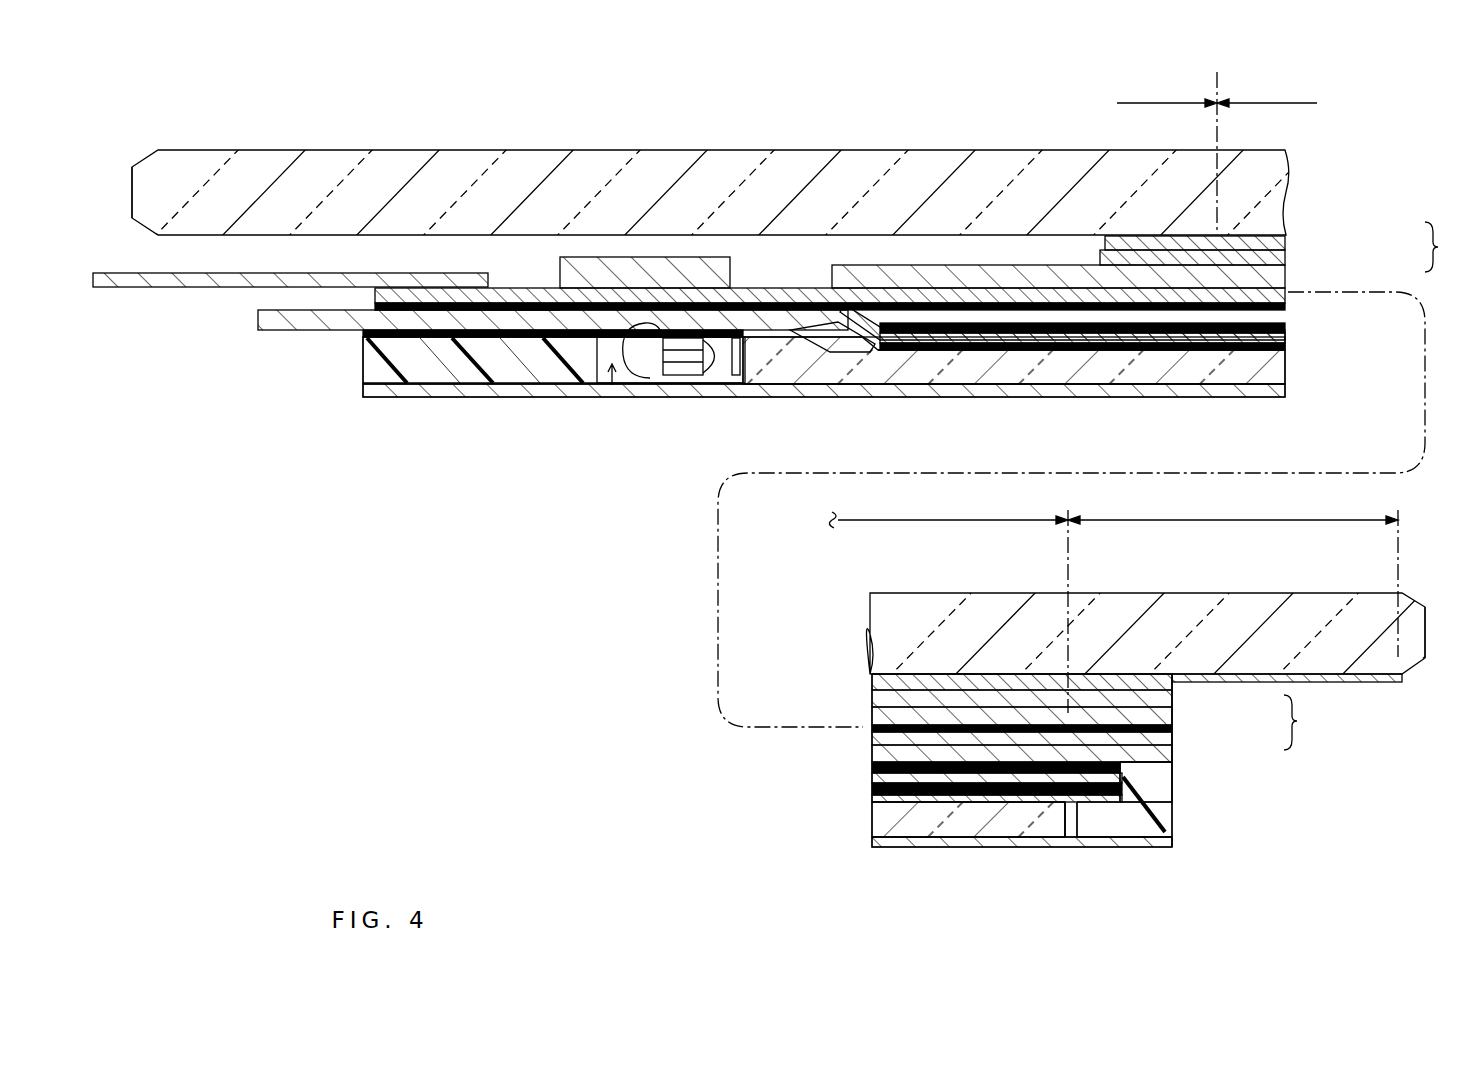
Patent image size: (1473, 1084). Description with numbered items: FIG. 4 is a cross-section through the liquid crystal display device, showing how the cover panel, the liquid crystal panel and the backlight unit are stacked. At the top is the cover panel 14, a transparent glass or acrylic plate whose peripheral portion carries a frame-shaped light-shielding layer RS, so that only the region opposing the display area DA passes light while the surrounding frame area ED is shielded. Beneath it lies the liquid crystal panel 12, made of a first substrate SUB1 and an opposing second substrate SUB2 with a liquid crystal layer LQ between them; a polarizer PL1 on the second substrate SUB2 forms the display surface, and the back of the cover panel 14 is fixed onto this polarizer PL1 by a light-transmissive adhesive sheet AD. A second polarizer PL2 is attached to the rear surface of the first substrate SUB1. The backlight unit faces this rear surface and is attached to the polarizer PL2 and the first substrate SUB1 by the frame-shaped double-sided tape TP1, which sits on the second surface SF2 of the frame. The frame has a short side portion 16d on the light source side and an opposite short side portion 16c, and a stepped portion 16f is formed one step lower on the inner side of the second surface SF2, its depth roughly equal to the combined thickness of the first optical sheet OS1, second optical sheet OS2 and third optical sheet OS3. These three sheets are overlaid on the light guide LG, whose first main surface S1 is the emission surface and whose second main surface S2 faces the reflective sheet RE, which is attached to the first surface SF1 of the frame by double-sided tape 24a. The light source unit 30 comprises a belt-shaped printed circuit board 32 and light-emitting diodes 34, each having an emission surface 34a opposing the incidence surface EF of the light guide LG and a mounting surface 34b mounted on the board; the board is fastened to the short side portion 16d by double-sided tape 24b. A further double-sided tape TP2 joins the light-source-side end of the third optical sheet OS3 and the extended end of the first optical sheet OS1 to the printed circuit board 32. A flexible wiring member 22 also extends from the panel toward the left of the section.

The cover panel 14 is at (380, 160).
The light-shielding layer RS is at (223, 243).
The flexible wiring board 22 is at (147, 290).
The printed circuit board 32 is at (527, 320).
The second substrate SUB2 is at (1282, 278).
The first substrate SUB1 is at (1282, 298).
The liquid crystal panel 12 is at (1375, 486).
The polarizer PL1 is at (1265, 248).
The adhesive sheet AD is at (1275, 257).
The liquid crystal layer LQ is at (1025, 720).
The double-sided tape TP1 is at (772, 302).
The double-sided tape TP2 is at (958, 312).
The polarizer PL2 is at (1288, 314).
The third optical sheet OS3 is at (1288, 337).
The second optical sheet OS2 is at (1288, 350).
The first optical sheet OS1 is at (1237, 348).
The light guide LG is at (1180, 380).
The reflective sheet RE is at (905, 392).
The first main surface S1 is at (1128, 340).
The second main surface S2 is at (1020, 392).
The short side portion 16d is at (383, 397).
The double-sided tape 24a is at (470, 397).
The double-sided tape 24b is at (548, 397).
The light source unit 30 is at (608, 397).
The light-emitting diode 34 is at (692, 397).
The emission surface 34a is at (762, 397).
The mounting surface 34b is at (648, 397).
The incidence surface EF is at (725, 397).
The first surface SF1 is at (433, 397).
The second surface SF2 is at (497, 337).
The short side portion 16c is at (1155, 815).
The stepped portion 16f is at (1097, 832).
The frame area ED is at (1233, 392).
The display area DA is at (1062, 301).